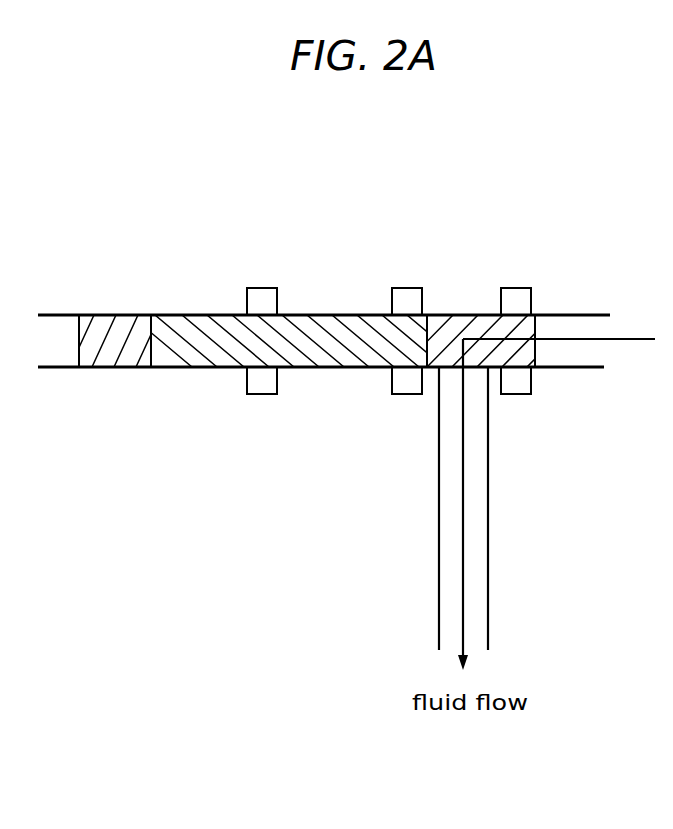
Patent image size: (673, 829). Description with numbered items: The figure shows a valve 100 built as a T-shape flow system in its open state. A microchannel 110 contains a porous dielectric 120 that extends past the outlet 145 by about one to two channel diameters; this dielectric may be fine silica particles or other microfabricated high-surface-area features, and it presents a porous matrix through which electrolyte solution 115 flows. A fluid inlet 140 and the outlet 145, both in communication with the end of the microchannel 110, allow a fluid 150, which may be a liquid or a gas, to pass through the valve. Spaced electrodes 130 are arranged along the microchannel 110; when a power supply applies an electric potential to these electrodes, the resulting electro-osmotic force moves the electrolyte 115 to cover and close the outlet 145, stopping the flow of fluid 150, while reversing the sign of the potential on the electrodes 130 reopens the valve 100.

The valve 100 is at (355, 414).
The microchannel 110 is at (107, 370).
The electrolyte solution 115 is at (324, 330).
The porous dielectric 120 is at (93, 322).
The spaced electrodes 130 is at (523, 394).
The fluid inlet 140 is at (555, 313).
The outlet 145 is at (490, 530).
The fluid 150 is at (630, 340).